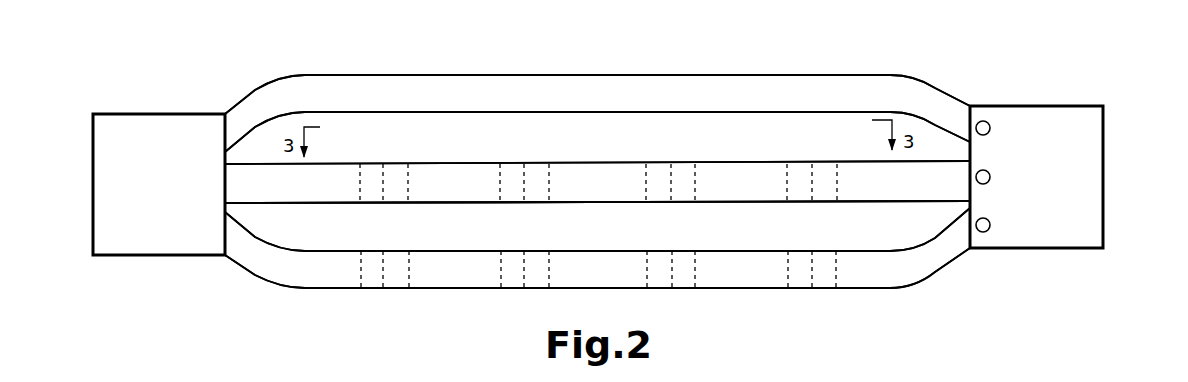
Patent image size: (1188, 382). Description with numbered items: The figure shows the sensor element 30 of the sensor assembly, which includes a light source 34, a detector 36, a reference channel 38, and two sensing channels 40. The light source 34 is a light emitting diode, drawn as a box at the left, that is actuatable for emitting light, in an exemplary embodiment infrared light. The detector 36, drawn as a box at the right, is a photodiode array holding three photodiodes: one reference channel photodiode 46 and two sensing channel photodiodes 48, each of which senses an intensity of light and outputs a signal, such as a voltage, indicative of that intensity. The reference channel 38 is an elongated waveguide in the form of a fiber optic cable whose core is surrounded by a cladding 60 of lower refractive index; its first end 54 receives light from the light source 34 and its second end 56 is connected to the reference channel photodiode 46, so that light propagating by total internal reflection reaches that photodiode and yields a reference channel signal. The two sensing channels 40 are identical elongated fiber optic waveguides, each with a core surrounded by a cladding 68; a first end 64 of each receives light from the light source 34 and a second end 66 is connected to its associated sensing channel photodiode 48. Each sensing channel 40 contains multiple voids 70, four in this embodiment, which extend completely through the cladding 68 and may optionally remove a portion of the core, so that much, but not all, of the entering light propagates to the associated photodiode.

The sensor element 30 is at (300, 334).
The light source 34 is at (151, 132).
The detector 36 is at (1090, 145).
The reference channel 38 is at (746, 70).
The sensing channels 40 is at (633, 203).
The reference channel photodiode 46 is at (985, 124).
The sensing channel photodiodes 48 is at (985, 168).
The first end of the reference channel 54 is at (240, 122).
The second end of the reference channel 56 is at (945, 108).
The cladding 60 is at (580, 88).
The first end of the sensing channel 64 is at (245, 185).
The second end of the sensing channel 66 is at (915, 178).
The cladding 68 is at (456, 178).
The voids 70 is at (392, 170).